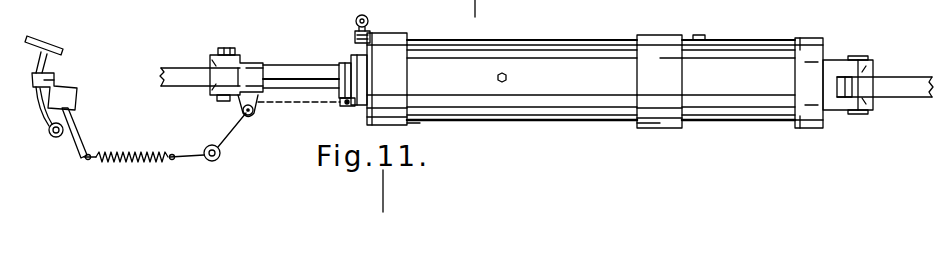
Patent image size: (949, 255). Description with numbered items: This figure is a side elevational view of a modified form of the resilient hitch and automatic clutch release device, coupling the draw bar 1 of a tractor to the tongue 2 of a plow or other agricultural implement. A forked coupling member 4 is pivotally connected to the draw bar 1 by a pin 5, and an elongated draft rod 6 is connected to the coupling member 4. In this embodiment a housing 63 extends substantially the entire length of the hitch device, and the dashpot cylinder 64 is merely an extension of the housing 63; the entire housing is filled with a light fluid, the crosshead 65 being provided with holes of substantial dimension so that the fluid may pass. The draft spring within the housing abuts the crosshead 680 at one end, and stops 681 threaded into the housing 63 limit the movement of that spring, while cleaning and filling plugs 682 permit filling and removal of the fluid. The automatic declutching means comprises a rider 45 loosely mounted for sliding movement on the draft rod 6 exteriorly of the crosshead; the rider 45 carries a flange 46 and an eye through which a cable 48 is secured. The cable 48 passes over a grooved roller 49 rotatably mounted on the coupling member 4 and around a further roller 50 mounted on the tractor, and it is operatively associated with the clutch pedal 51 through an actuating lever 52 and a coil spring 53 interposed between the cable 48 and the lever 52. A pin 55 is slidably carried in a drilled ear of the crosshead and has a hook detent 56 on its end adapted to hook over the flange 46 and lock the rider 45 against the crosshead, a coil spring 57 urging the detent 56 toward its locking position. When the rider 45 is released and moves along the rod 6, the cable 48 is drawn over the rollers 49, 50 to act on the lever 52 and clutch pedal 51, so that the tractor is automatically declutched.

The draw bar 1 is at (180, 77).
The tongue 2 is at (898, 82).
The forked coupling member 4 is at (250, 62).
The pin 5 is at (226, 47).
The draft rod 6 is at (289, 72).
The rider 45 is at (348, 78).
The flange 46 is at (357, 107).
The cable 48 is at (229, 140).
The grooved roller 49 is at (254, 116).
The roller 50 is at (212, 162).
The clutch pedal 51 is at (44, 60).
The actuating lever 52 is at (80, 137).
The coil spring 53 is at (134, 165).
The pin 55 is at (371, 24).
The hook detent 56 is at (354, 52).
The coil spring 57 is at (370, 47).
The housing 63 is at (553, 56).
The dashpot cylinder 64 is at (748, 55).
The crosshead 65 is at (667, 128).
The crosshead 680 is at (409, 124).
The stops 681 is at (508, 78).
The cleaning and filling plugs 682 is at (700, 35).